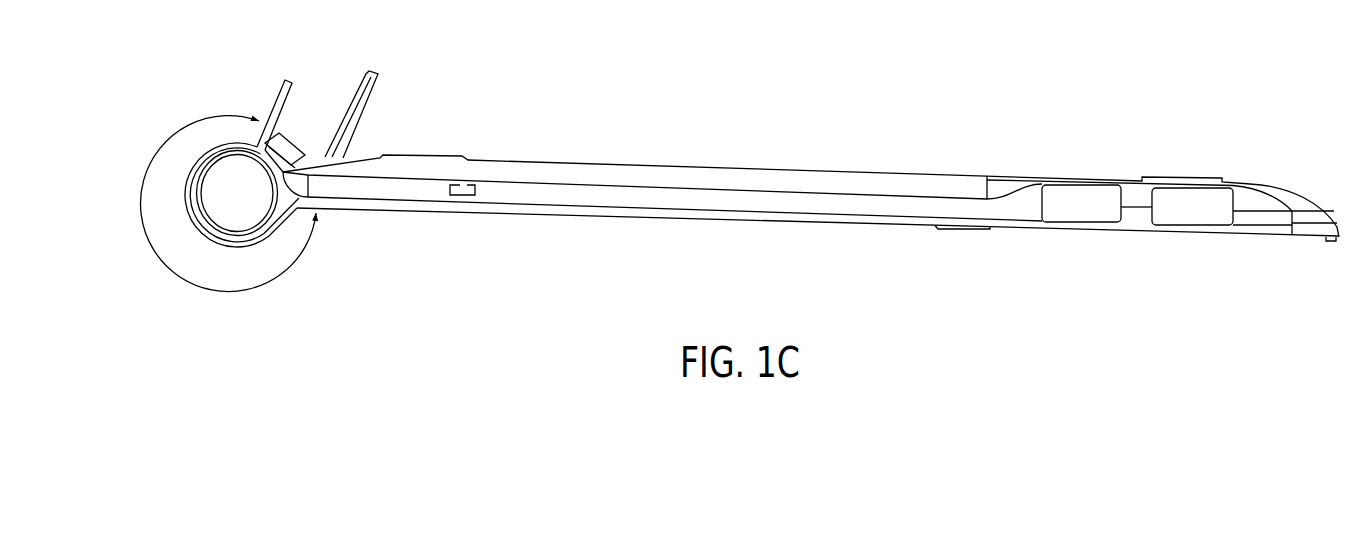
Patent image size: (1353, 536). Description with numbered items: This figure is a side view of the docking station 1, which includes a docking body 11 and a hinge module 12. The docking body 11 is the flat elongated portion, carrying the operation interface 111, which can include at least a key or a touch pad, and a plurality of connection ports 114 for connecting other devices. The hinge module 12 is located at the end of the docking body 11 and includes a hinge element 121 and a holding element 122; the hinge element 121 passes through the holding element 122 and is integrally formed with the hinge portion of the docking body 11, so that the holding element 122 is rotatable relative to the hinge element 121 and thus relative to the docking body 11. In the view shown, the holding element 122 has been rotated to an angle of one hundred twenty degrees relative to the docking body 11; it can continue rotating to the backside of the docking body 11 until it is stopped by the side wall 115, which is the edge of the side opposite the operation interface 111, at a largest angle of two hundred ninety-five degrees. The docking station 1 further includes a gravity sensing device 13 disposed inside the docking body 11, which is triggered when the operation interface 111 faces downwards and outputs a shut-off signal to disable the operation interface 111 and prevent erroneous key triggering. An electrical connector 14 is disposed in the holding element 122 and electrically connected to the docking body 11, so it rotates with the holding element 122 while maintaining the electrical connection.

The docking station 1 is at (958, 72).
The docking body 11 is at (877, 187).
The operation interface 111 is at (867, 232).
The connection ports 114 is at (1188, 213).
The side wall 115 is at (362, 151).
The hinge module 12 is at (252, 53).
The hinge element 121 is at (240, 182).
The holding element 122 is at (272, 110).
The gravity sensing device 13 is at (471, 186).
The electrical connector 14 is at (291, 155).